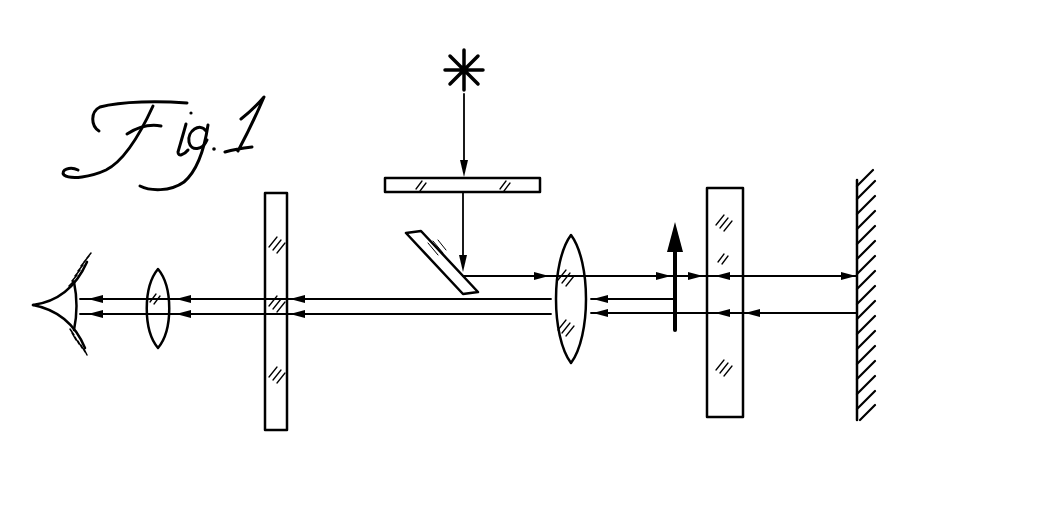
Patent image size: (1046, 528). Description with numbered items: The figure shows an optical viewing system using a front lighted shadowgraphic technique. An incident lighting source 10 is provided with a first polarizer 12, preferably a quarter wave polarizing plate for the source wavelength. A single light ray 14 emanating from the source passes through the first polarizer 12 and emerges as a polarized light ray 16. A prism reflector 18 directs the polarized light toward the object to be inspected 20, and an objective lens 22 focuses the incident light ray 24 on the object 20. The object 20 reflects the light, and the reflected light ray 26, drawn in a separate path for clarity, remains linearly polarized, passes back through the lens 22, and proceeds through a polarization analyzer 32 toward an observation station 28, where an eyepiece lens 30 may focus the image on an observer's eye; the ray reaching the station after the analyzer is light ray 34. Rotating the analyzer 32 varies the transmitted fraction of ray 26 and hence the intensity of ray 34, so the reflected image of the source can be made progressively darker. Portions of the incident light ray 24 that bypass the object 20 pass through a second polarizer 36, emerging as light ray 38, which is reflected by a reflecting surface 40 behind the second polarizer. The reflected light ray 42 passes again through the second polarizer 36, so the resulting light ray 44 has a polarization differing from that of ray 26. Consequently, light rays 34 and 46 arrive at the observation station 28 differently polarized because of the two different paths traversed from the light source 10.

The incident lighting source 10 is at (467, 55).
The first polarizer 12 is at (432, 177).
The light ray 14 is at (465, 135).
The polarized light ray 16 is at (464, 232).
The prism reflector 18 is at (423, 250).
The object to be inspected 20 is at (672, 245).
The objective lens 22 is at (563, 342).
The incident light ray 24 is at (634, 275).
The reflected light ray 26 is at (641, 300).
The observation station 28 is at (82, 413).
The eyepiece lens 30 is at (165, 341).
The polarization analyzer 32 is at (283, 408).
The light ray 34 is at (234, 298).
The second polarizer 36 is at (738, 404).
The light ray 38 is at (765, 276).
The reflecting surface 40 is at (857, 198).
The reflected light ray 42 is at (794, 314).
The light ray 44 is at (654, 316).
The light ray 46 is at (210, 315).